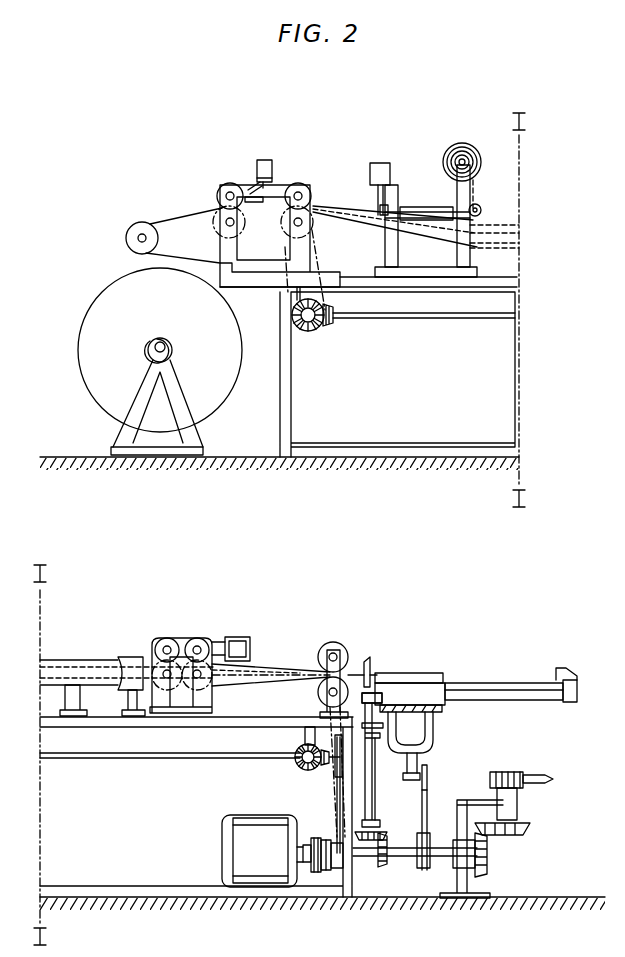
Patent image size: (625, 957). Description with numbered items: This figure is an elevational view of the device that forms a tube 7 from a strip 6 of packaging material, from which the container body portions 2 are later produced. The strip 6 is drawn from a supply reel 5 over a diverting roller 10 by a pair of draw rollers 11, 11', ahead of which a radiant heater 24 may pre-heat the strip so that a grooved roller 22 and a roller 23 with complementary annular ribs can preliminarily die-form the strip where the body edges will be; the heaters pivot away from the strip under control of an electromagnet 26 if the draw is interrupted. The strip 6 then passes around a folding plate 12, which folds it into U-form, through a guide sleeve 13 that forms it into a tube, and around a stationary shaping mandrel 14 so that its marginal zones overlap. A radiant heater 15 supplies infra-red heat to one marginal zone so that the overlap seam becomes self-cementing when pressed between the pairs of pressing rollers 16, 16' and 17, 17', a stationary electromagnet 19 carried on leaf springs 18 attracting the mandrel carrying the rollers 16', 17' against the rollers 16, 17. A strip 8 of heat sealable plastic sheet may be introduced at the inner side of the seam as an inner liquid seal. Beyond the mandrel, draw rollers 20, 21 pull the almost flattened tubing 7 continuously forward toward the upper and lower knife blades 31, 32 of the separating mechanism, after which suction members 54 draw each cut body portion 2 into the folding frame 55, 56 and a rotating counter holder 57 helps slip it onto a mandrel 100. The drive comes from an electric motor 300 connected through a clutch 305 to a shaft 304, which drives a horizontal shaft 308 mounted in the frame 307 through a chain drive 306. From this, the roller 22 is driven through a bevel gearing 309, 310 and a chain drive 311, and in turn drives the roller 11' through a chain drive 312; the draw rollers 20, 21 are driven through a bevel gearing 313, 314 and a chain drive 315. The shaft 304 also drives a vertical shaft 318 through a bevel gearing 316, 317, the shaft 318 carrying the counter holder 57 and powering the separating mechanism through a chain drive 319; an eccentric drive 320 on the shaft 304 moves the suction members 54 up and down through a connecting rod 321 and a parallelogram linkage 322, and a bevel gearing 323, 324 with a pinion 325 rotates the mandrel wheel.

The body portion 2 is at (437, 693).
The supply reel 5 is at (100, 310).
The strip 6 is at (167, 216).
The tube 7 is at (272, 665).
The strip of heat sealable plastic sheet 8 is at (473, 180).
The diverting roller 10 is at (128, 233).
The draw roller 11 is at (220, 177).
The draw roller 11' is at (208, 205).
The folding plate 12 is at (373, 222).
The guide sleeve 13 is at (125, 657).
The shaping mandrel 14 is at (247, 667).
The radiant heater 15 is at (425, 207).
The pressing roller 16 is at (181, 654).
The pressing roller 16' is at (178, 690).
The pressing roller 17 is at (200, 629).
The pressing roller 17' is at (211, 691).
The leaf spring 18 is at (519, 240).
The electromagnet 19 is at (238, 635).
The draw roller 20 is at (330, 644).
The draw roller 21 is at (319, 692).
The roller formed with annular grooves 22 is at (314, 223).
The roller formed with annular ribs 23 is at (311, 196).
The radiant heater 24 is at (252, 192).
The electromagnet 26 is at (272, 170).
The upper knife blade 31 is at (372, 660).
The lower knife blade 32 is at (364, 658).
The suction members 54 is at (433, 750).
The folding frame 55 is at (417, 673).
The folding frame 56 is at (442, 712).
The counter holder 57 is at (383, 698).
The mandrel 100 is at (498, 686).
The electric motor 300 is at (247, 828).
The shaft 304 is at (405, 857).
The clutch 305 is at (318, 873).
The chain drive 306 is at (335, 840).
The frame 307 is at (287, 400).
The horizontal shaft 308 is at (433, 320).
The bevel gearing 309 is at (328, 322).
The bevel gearing 310 is at (312, 332).
The chain drive 311 is at (318, 249).
The chain drive 312 is at (243, 243).
The bevel gearing 313 is at (323, 772).
The bevel gearing 314 is at (297, 770).
The chain drive 315 is at (302, 737).
The bevel gearing 316 is at (380, 867).
The bevel gearing 317 is at (386, 830).
The vertical shaft 318 is at (375, 803).
The chain drive 319 is at (370, 737).
The eccentric drive 320 is at (430, 868).
The connecting rod 321 is at (426, 812).
The parallelogram linkage 322 is at (428, 788).
The bevel gearing 323 is at (488, 858).
The bevel gearing 324 is at (524, 832).
The pinion 325 is at (506, 777).